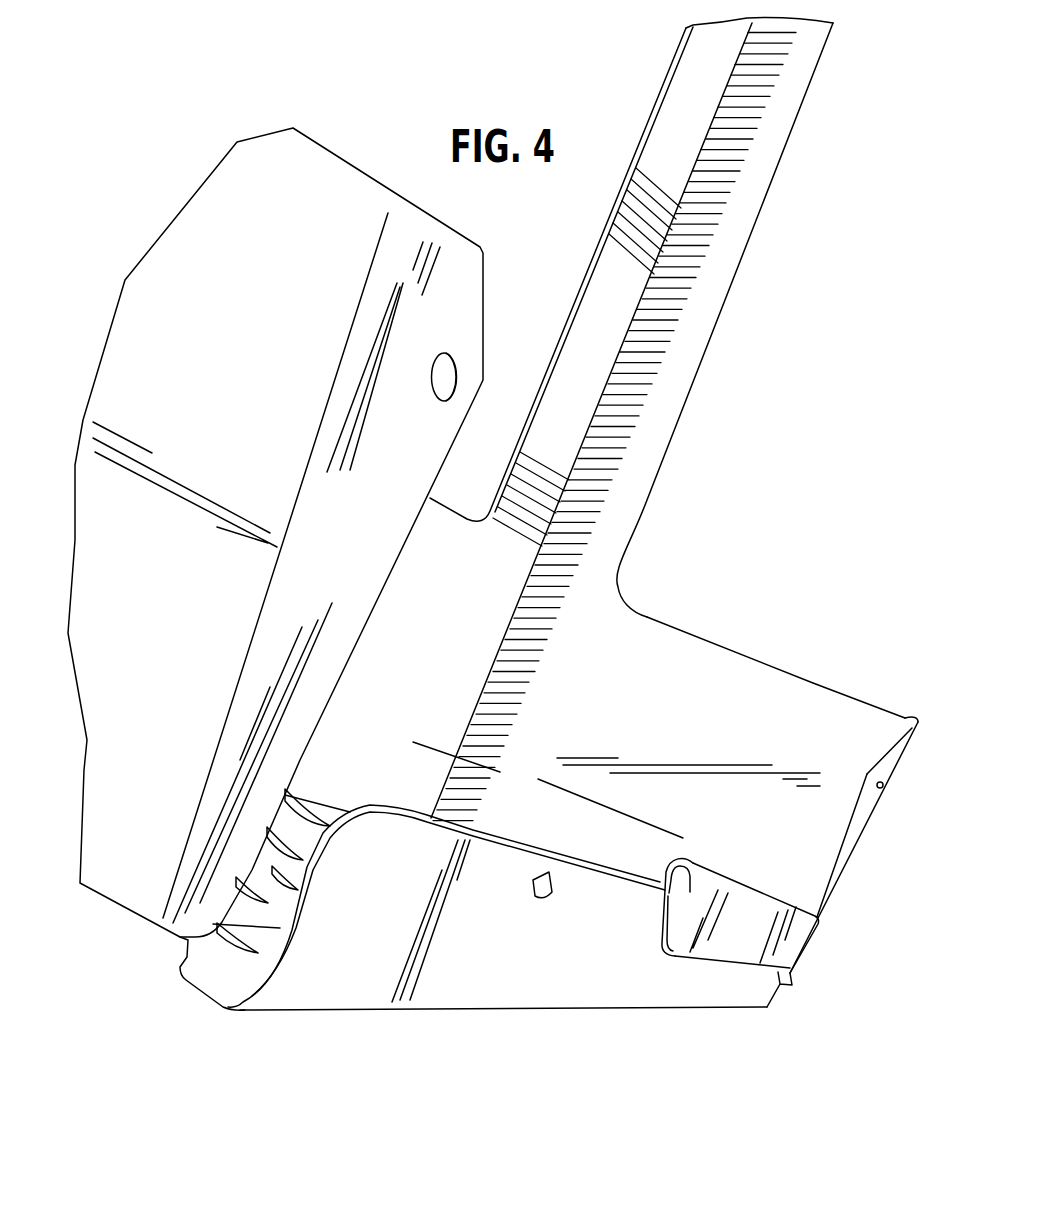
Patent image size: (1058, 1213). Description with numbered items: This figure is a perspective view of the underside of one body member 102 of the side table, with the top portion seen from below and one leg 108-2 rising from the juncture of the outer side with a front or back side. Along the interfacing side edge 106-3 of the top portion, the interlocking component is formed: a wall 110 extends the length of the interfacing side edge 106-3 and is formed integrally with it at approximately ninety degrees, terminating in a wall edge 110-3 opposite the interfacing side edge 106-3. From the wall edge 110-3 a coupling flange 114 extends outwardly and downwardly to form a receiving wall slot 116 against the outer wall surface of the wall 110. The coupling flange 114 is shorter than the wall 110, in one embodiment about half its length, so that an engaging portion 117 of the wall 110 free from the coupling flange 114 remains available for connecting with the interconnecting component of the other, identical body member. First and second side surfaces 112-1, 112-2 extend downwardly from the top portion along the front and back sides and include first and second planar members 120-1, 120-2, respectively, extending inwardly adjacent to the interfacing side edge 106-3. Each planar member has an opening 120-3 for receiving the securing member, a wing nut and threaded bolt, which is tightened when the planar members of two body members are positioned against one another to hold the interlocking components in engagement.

The body member 102 is at (798, 340).
The leg 108-2 is at (770, 150).
The first side surface 112-1 is at (783, 732).
The second side surface 112-2 is at (157, 322).
The first planar member 120-1 is at (363, 558).
The second planar member 120-2 is at (887, 768).
The opening 120-3 is at (460, 368).
The engaging portion 117 is at (385, 760).
The wall 110 is at (483, 940).
The wall edge 110-3 is at (425, 820).
The interfacing side edge 106-3 is at (650, 1009).
The coupling flange 114 is at (770, 930).
The receiving wall slot 116 is at (658, 947).